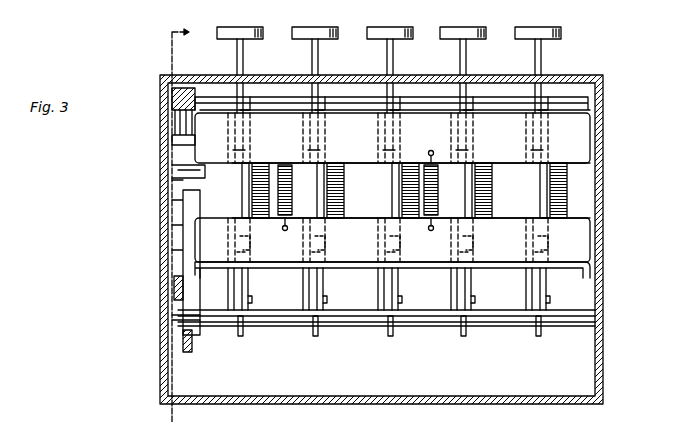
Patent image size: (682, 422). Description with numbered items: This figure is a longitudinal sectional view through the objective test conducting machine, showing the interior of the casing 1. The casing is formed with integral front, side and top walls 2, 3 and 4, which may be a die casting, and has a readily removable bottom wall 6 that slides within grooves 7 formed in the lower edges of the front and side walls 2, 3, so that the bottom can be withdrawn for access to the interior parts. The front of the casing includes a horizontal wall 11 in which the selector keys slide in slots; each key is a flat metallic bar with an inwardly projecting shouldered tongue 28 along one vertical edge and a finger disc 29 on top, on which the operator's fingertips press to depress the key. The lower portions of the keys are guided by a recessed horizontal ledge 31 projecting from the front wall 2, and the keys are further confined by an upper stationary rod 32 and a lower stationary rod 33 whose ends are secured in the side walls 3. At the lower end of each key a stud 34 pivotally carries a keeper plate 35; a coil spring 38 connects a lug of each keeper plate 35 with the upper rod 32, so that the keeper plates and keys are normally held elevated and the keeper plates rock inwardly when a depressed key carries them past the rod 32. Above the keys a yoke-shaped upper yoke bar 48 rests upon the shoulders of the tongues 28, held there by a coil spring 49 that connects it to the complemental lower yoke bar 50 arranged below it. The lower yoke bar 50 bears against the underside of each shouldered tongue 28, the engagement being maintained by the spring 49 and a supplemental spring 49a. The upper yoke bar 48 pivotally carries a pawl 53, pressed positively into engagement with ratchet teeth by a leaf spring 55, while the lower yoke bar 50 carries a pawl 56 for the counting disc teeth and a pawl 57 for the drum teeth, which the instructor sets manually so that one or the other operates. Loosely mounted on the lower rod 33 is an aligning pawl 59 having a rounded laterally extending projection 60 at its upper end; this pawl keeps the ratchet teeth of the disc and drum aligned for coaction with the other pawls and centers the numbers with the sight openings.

The casing 1 is at (662, 272).
The front wall 2 is at (396, 361).
The side walls 3 is at (164, 360).
The top wall 4 is at (585, 75).
The bottom wall 6 is at (636, 366).
The grooves 7 is at (167, 395).
The horizontal wall 11 is at (362, 75).
The shouldered tongue 28 is at (392, 193).
The finger disc 29 is at (532, 27).
The ledge 31 is at (508, 332).
The upper rod 32 is at (585, 97).
The lower rod 33 is at (585, 312).
The stud 34 is at (325, 298).
The keeper plate 35 is at (460, 288).
The coil spring 38 is at (250, 165).
The upper yoke bar 48 is at (575, 137).
The coil spring 49 is at (440, 220).
The supplemental spring 49a is at (300, 220).
The lower yoke bar 50 is at (578, 230).
The pawl 53 is at (186, 110).
The leaf spring 55 is at (183, 135).
The pawl 56 is at (178, 290).
The pawl 57 is at (190, 332).
The aligning pawl 59 is at (208, 210).
The projection 60 is at (185, 195).